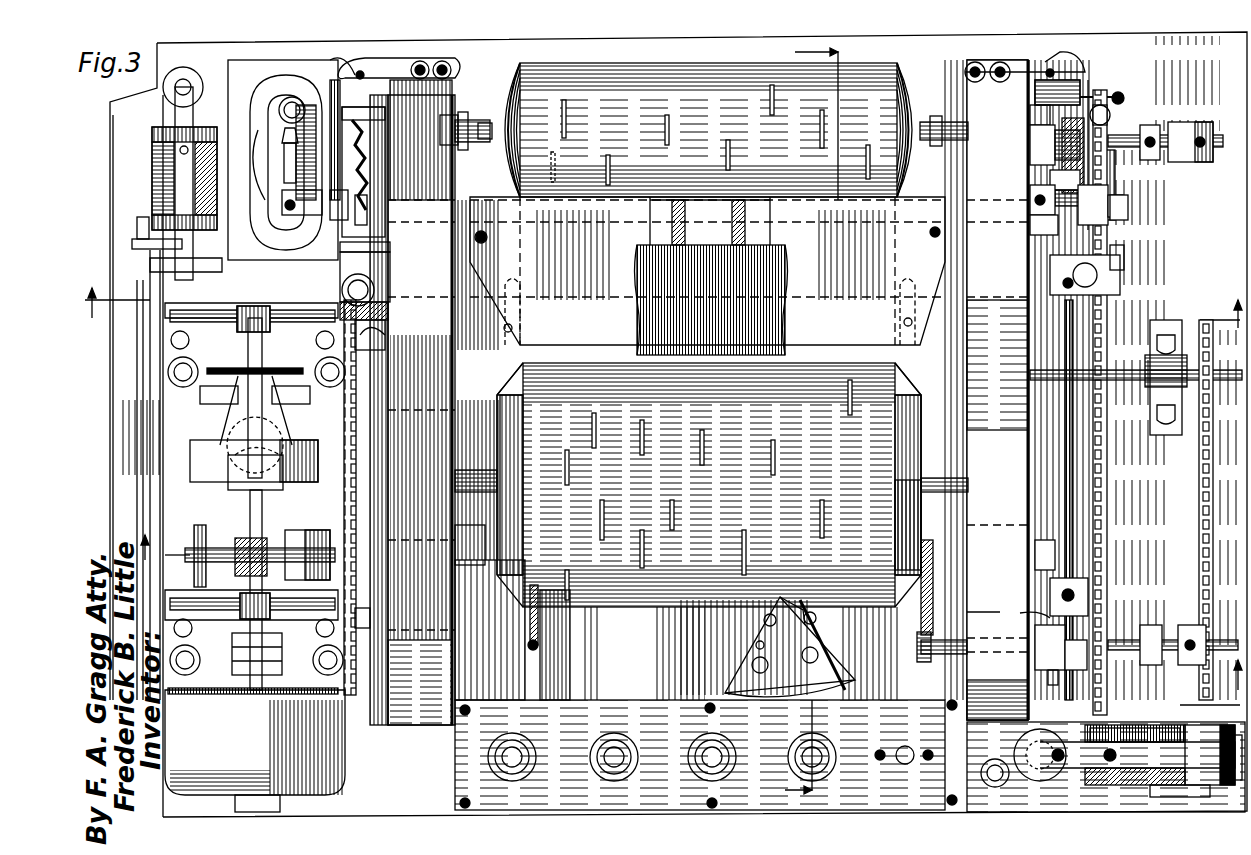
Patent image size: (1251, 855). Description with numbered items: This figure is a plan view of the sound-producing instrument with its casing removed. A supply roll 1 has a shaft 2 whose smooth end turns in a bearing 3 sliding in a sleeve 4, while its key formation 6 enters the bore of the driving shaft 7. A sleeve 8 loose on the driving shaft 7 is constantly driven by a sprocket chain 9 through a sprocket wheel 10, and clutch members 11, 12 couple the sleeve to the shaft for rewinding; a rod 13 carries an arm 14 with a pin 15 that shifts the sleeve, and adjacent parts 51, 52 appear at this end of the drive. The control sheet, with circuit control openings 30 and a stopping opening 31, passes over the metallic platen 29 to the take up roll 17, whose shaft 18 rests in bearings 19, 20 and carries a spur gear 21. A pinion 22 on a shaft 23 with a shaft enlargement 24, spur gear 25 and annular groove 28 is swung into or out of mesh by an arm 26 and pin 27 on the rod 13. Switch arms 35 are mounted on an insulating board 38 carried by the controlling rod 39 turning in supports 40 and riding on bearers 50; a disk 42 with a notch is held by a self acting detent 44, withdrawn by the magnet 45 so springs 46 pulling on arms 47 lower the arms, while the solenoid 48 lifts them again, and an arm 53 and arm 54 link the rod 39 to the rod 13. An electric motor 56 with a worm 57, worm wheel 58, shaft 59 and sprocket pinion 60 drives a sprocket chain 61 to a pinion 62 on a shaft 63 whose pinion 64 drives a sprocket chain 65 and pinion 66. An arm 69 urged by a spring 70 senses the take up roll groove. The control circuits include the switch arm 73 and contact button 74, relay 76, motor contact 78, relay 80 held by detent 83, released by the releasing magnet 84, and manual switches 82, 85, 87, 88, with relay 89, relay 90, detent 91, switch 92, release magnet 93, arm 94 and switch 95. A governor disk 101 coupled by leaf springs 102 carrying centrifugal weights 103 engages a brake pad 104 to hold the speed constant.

The supply roll 1 is at (902, 72).
The shaft 2 is at (480, 122).
The bearing 3 is at (440, 128).
The sleeve 4 is at (117, 316).
The key formation 6 is at (944, 153).
The driving shaft 7 is at (803, 122).
The sleeve 8 is at (1085, 95).
The sprocket chain 9 is at (1100, 445).
The sprocket wheel 10 is at (1111, 83).
The clutch member 11 is at (1160, 135).
The clutch member 12 is at (132, 547).
The rod 13 is at (1068, 522).
The arm 14 is at (1055, 192).
The pin 15 is at (1050, 178).
The take up roll 17 is at (895, 523).
The shaft 18 is at (948, 548).
The bearing 19 is at (470, 525).
The bearing 20 is at (997, 530).
The spur gear 21 is at (940, 612).
The pinion 22 is at (922, 662).
The shaft 23 is at (948, 655).
The shaft enlargement 24 is at (1095, 615).
The spur gear 25 is at (1105, 710).
The arm 26 is at (1090, 585).
The pin 27 is at (1017, 626).
The annular groove 28 is at (1053, 680).
The metallic platen 29 is at (476, 470).
The circuit control openings 30 is at (664, 130).
The opening 31 is at (566, 166).
The switch arm 35 is at (750, 288).
The insulating board 38 is at (822, 270).
The controlling rod 39 is at (478, 214).
The supports 40 is at (412, 402).
The disk 42 is at (365, 215).
The self acting detent 44 is at (390, 246).
The magnet 45 is at (340, 283).
The springs 46 is at (367, 170).
The arms 47 is at (325, 232).
The solenoid 48 is at (283, 160).
The bearers 50 is at (505, 395).
The knob shaft 51 is at (1122, 96).
The bracket 52 is at (1082, 80).
The arm 53 is at (1085, 285).
The arm 54 is at (1110, 262).
The electric motor 56 is at (255, 701).
The worm 57 is at (260, 556).
The worm wheel 58 is at (250, 580).
The shaft 59 is at (185, 555).
The sprocket pinion 60 is at (358, 606).
The sprocket chain 61 is at (345, 500).
The pinion 62 is at (455, 340).
The shaft 63 is at (1132, 382).
The pinion 64 is at (1165, 322).
The sprocket chain 65 is at (1205, 500).
The pinion 66 is at (815, 720).
The arm 69 is at (550, 612).
The spring 70 is at (530, 648).
The switch arm 73 is at (800, 650).
The contact button 74 is at (752, 665).
The relay 76 is at (399, 58).
The contact 78 is at (1176, 797).
The relay 80 is at (1070, 727).
The manual switch 82 is at (714, 755).
The detent 83 is at (1236, 735).
The releasing magnet 84 is at (1032, 770).
The manual switch 85 is at (814, 755).
The manual switch 87 is at (614, 755).
The manually operated switch 88 is at (512, 755).
The relay 89 is at (1025, 59).
The relay 90 is at (160, 175).
The detent 91 is at (195, 272).
The switch 92 is at (137, 232).
The release magnet 93 is at (187, 66).
The arm 94 is at (300, 156).
The switch 95 is at (333, 62).
The disk 101 is at (228, 368).
The leaf springs 102 is at (235, 423).
The centrifugal weights 103 is at (200, 435).
The brake pad 104 is at (253, 402).